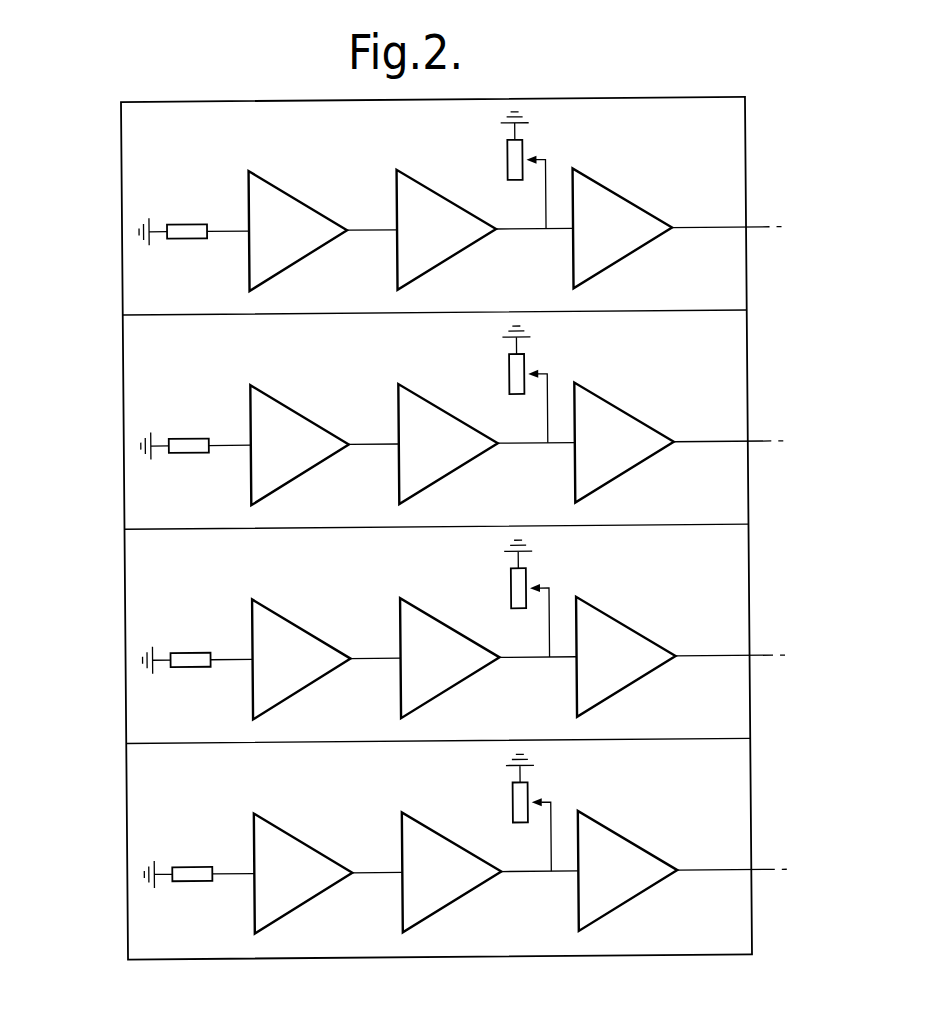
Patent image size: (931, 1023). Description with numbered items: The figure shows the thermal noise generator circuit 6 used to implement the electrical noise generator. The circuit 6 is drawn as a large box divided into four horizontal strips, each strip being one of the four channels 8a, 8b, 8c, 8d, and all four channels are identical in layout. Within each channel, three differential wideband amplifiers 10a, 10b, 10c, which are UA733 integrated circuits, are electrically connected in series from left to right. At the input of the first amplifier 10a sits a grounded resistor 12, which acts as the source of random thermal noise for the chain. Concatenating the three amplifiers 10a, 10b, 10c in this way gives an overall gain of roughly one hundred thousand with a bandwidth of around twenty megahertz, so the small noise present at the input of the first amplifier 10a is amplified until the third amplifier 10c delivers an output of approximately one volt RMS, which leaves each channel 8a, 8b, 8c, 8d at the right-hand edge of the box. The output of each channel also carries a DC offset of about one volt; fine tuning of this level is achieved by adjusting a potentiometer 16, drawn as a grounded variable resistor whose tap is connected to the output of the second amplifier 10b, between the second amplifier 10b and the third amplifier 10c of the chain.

The thermal noise generator circuit 6 is at (762, 100).
The first channel 8a is at (148, 154).
The second channel 8b is at (151, 369).
The third channel 8c is at (153, 582).
The fourth channel 8d is at (155, 796).
The first amplifier 10a is at (305, 242).
The second amplifier 10b is at (453, 242).
The third amplifier 10c is at (629, 242).
The grounded resistor 12 is at (190, 221).
The potentiometer 16 is at (538, 137).